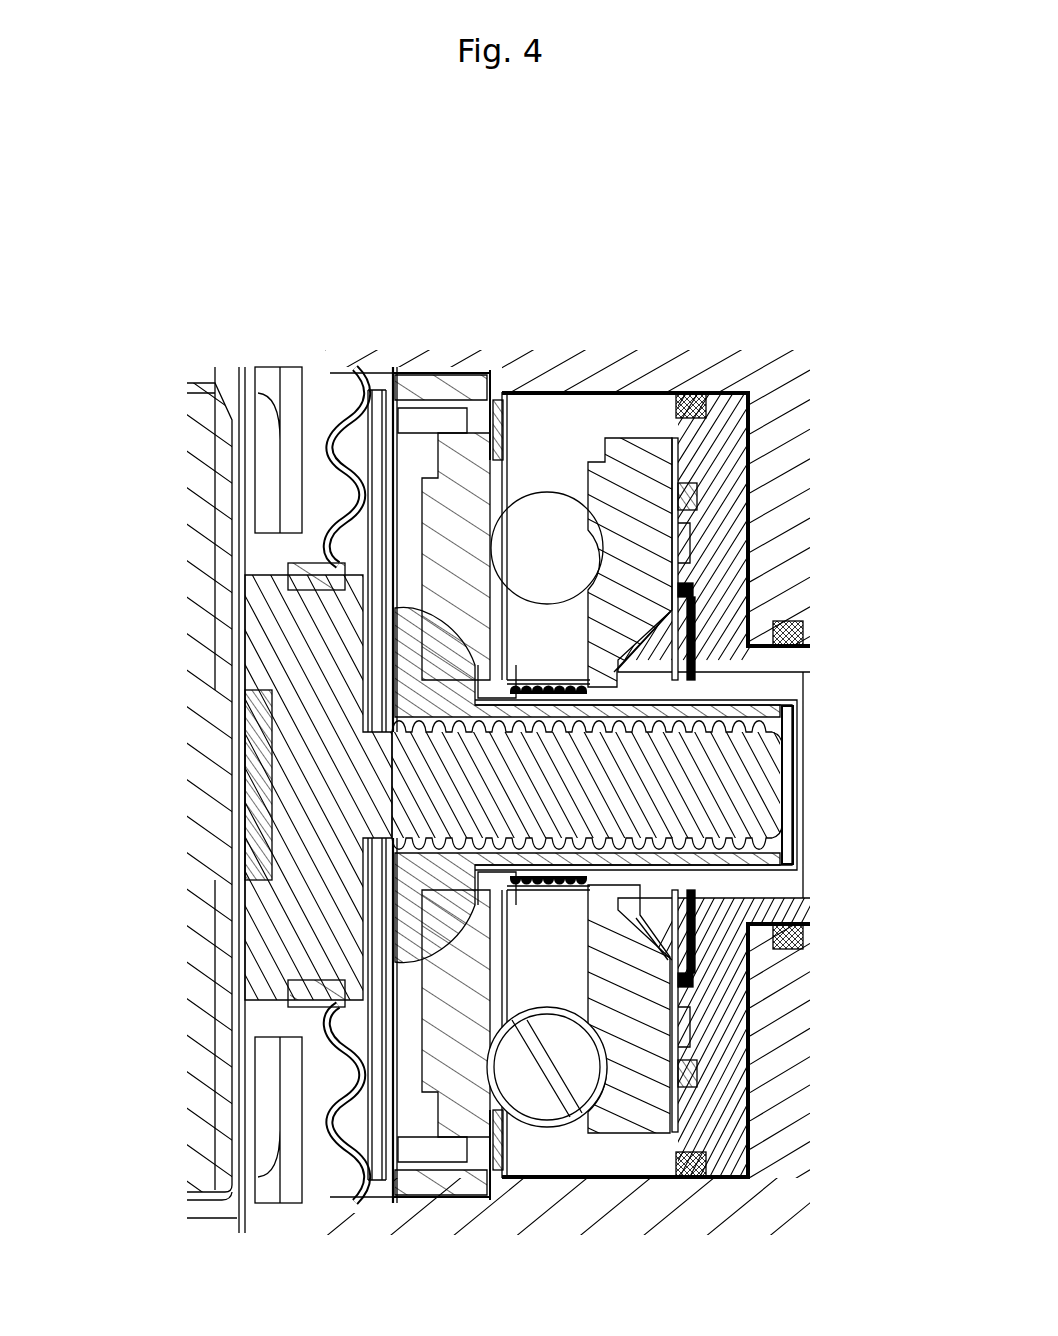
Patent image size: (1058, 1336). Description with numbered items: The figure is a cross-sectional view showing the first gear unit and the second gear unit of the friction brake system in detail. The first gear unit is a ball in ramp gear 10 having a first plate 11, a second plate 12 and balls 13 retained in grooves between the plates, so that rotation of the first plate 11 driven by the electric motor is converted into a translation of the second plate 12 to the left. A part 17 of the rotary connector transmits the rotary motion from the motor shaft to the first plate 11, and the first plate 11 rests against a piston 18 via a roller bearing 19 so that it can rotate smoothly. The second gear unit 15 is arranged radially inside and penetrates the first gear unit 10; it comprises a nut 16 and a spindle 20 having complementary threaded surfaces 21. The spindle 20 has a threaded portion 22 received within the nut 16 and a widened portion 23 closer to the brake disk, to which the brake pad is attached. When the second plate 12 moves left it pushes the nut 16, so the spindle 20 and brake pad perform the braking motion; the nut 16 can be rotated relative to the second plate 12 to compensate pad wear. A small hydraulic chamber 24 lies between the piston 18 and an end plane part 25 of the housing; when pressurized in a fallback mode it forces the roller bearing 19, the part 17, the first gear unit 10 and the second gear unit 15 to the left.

The ball in ramp gear 10 is at (547, 694).
The first plate 11 is at (640, 458).
The second plate 12 is at (520, 392).
The ball 13 is at (555, 500).
The second gear unit 15 is at (80, 750).
The nut 16 is at (460, 872).
The part of the rotary connector 17 is at (735, 692).
The piston 18 is at (733, 600).
The roller bearing 19 is at (698, 528).
The spindle 20 is at (300, 822).
The threaded surfaces 21 is at (588, 728).
The threaded portion 22 is at (760, 808).
The widened portion 23 is at (293, 634).
The hydraulic chamber 24 is at (752, 392).
The end plane part of the housing 25 is at (800, 460).